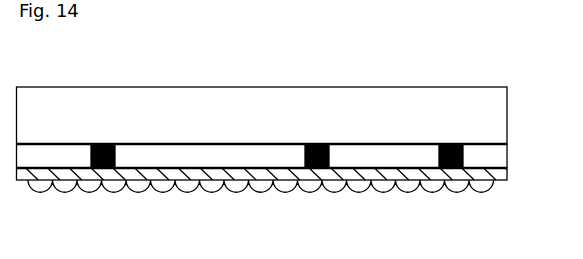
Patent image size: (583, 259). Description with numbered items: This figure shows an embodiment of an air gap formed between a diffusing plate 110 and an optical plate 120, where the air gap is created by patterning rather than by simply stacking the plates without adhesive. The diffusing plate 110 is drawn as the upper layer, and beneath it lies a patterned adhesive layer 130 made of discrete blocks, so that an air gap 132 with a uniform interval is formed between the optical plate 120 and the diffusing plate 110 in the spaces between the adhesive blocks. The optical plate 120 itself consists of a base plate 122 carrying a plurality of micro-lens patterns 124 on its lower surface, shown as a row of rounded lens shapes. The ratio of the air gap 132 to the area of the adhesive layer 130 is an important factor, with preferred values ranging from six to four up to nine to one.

The diffusing plate 110 is at (455, 97).
The air gap 132 is at (363, 155).
The adhesive layer 130 is at (111, 169).
The optical plate 120 is at (288, 211).
The base plate 122 is at (504, 175).
The micro-lens pattern 124 is at (273, 209).